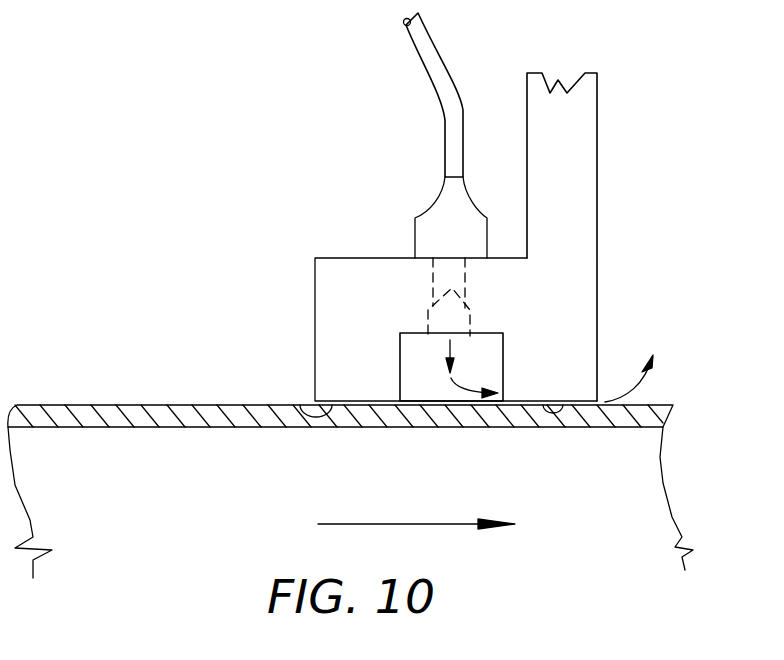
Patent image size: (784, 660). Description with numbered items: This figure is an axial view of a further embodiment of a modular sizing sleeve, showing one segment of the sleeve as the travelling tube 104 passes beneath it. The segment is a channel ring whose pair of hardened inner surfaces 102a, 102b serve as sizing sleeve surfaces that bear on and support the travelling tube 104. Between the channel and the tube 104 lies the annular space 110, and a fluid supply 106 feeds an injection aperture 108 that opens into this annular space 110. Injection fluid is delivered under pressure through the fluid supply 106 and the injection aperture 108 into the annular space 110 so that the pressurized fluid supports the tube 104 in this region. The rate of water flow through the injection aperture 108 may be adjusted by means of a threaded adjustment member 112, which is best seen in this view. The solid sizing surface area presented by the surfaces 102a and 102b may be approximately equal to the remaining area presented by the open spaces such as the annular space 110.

The fluid supply 106 is at (445, 137).
The injection aperture 108 is at (436, 289).
The threaded adjustment member 112 is at (488, 308).
The annular space 110 is at (490, 357).
The hardened inner surface 102a is at (299, 403).
The hardened inner surface 102b is at (560, 405).
The travelling tube 104 is at (637, 427).